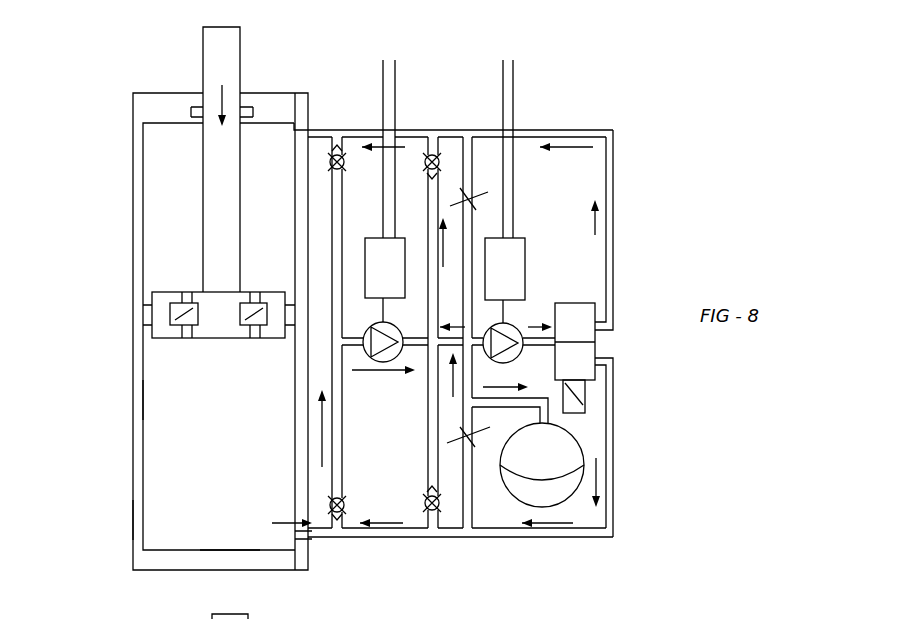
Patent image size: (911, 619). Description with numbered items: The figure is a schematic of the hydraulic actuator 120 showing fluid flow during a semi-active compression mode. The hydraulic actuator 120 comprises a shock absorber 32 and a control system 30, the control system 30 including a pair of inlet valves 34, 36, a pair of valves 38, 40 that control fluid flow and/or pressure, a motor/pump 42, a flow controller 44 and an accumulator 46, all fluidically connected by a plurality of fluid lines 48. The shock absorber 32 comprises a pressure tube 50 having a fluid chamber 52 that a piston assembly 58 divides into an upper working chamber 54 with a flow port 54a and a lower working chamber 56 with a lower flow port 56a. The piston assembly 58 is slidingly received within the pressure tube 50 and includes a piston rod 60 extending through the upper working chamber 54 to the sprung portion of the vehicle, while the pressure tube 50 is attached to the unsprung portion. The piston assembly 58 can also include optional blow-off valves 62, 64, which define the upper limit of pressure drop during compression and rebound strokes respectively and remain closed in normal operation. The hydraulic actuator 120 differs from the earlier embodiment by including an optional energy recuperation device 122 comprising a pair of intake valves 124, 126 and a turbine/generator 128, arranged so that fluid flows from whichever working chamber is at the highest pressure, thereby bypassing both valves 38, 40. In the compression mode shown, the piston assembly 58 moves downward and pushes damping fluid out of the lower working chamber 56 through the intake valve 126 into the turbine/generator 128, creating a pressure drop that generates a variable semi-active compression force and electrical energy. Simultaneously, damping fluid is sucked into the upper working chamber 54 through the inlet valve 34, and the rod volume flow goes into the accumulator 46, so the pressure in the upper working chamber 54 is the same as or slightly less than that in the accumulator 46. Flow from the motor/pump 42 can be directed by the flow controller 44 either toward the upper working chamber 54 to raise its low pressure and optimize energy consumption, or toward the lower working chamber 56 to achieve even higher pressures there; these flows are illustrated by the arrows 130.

The hydraulic actuator 120 is at (88, 104).
The control system 30 is at (610, 83).
The shock absorber 32 is at (116, 468).
The inlet valve 34 is at (425, 155).
The inlet valve 36 is at (420, 508).
The valve 38 is at (480, 190).
The valve 40 is at (482, 436).
The motor/pump 42 is at (520, 253).
The flow controller 44 is at (585, 302).
The accumulator 46 is at (560, 450).
The fluid lines 48 is at (613, 172).
The pressure tube 50 is at (133, 518).
The fluid chamber 52 is at (215, 395).
The upper working chamber 54 is at (188, 212).
The flow port 54a is at (293, 133).
The lower working chamber 56 is at (233, 495).
The lower flow port 56a is at (293, 531).
The piston assembly 58 is at (167, 297).
The piston rod 60 is at (227, 65).
The blow-off valve 62 is at (177, 323).
The blow-off valve 64 is at (250, 315).
The energy recuperation device 122 is at (404, 73).
The intake valve 124 is at (335, 153).
The intake valve 126 is at (328, 512).
The turbine/generator 128 is at (365, 257).
The arrows 130 is at (618, 226).